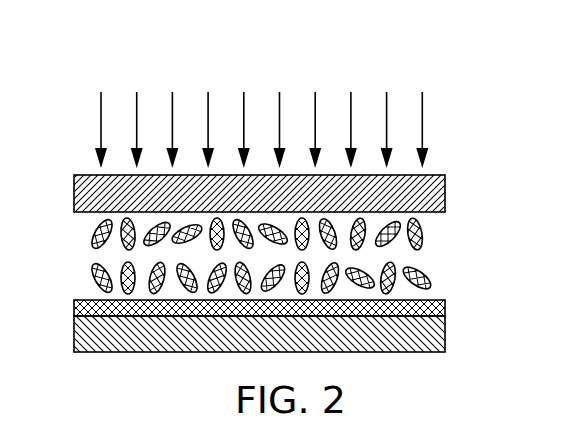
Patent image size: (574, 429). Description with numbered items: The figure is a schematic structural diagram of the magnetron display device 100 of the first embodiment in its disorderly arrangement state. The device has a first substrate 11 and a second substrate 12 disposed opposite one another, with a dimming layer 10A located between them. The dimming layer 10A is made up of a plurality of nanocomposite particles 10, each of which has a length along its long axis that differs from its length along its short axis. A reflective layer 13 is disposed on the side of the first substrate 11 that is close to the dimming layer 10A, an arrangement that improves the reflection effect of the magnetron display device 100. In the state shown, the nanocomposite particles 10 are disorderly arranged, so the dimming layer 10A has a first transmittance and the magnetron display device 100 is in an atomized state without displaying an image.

The magnetron display device 100 is at (110, 61).
The second substrate 12 is at (445, 192).
The nanocomposite particle 10 is at (423, 236).
The dimming layer 10A is at (297, 256).
The reflective layer 13 is at (445, 305).
The first substrate 11 is at (445, 332).